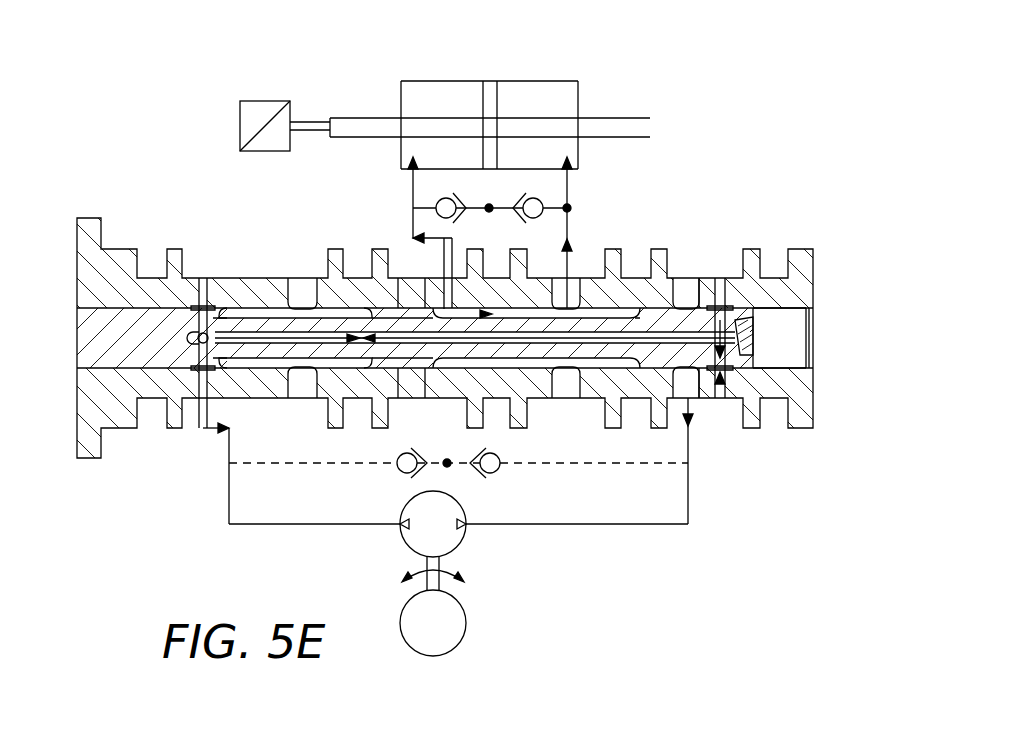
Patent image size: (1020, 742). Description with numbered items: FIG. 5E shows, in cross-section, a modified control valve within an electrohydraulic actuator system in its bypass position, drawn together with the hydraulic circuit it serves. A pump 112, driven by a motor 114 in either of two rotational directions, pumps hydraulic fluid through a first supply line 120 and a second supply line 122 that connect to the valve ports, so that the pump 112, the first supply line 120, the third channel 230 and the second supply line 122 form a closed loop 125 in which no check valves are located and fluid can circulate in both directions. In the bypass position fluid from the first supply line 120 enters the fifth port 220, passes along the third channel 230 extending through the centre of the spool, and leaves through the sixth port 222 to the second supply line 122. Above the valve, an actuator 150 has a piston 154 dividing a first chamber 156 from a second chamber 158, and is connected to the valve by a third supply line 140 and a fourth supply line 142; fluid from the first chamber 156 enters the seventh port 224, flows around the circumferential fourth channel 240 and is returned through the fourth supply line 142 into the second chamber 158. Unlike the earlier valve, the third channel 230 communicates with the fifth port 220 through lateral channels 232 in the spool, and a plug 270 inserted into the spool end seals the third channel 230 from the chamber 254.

The pump 112 is at (459, 546).
The motor 114 is at (467, 623).
The first hydraulic supply line 120 is at (660, 526).
The second hydraulic supply line 122 is at (262, 526).
The closed loop 125 is at (688, 502).
The third supply line 140 is at (567, 185).
The fourth supply line 142 is at (413, 185).
The actuator 150 is at (541, 72).
The piston 154 is at (488, 82).
The first chamber 156 is at (578, 92).
The second chamber 158 is at (401, 92).
The fifth port 220 is at (722, 400).
The sixth port 222 is at (199, 430).
The seventh port 224 is at (447, 277).
The third channel 230 is at (307, 343).
The lateral channels 232 is at (753, 350).
The fourth channel 240 is at (503, 310).
The chamber 254 is at (800, 347).
The plug 270 is at (757, 336).